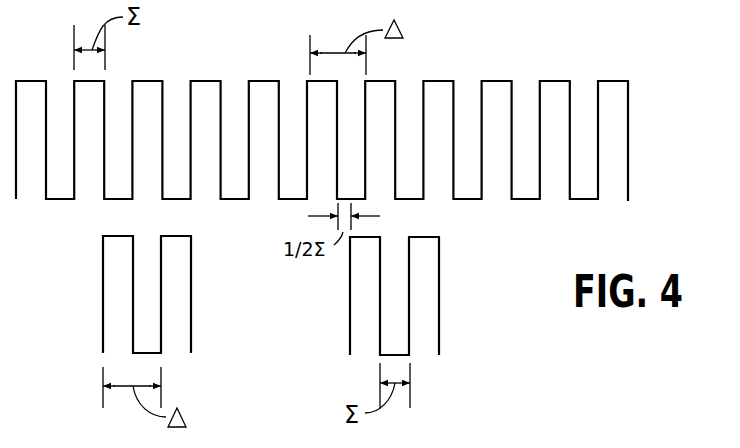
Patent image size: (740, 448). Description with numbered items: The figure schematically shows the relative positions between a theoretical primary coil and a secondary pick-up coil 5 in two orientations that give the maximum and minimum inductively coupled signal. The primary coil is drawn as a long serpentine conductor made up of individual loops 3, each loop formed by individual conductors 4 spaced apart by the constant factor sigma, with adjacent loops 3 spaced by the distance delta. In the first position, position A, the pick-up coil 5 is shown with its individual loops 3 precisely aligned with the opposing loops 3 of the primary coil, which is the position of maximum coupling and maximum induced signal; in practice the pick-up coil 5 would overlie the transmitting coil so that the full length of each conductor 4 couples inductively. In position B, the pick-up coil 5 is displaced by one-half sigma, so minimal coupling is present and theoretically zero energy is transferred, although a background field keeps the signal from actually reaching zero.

The serpentine loops 3 is at (115, 200).
The individual conductors 4 is at (190, 116).
The secondary pick-up coil 5 is at (208, 289).